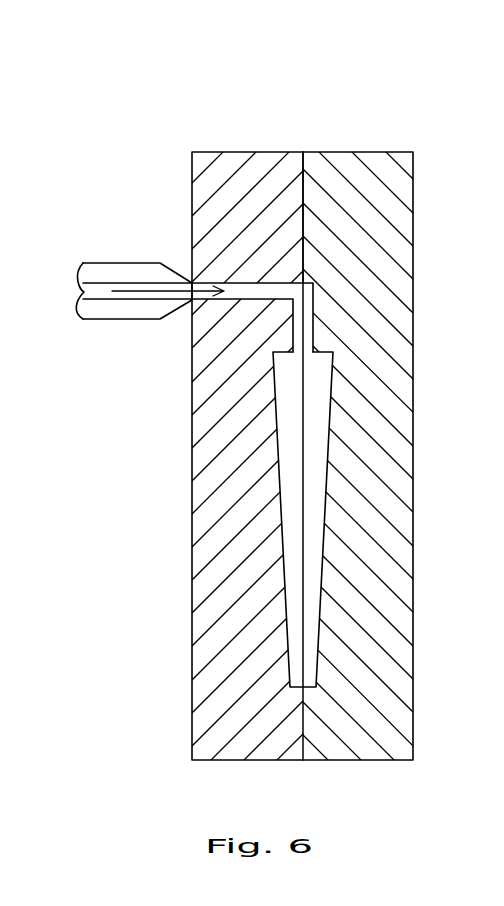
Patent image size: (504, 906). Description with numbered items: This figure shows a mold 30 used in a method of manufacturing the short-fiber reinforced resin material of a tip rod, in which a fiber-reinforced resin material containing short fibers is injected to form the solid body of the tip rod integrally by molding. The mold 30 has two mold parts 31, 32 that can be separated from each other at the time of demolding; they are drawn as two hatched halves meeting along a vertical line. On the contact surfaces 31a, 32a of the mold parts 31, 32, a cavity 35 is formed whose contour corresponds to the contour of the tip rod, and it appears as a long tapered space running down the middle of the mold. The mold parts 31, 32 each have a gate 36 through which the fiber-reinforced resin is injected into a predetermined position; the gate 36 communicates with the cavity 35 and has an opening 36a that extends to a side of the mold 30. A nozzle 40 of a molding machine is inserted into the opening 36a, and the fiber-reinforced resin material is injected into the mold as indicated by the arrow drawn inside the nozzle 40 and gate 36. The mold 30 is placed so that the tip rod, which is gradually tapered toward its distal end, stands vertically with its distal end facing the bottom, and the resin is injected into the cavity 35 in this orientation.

The mold 30 is at (402, 110).
The mold part 31 is at (207, 412).
The contact surface 31a is at (303, 231).
The mold part 32 is at (402, 390).
The contact surface 32a is at (302, 217).
The cavity 35 is at (315, 455).
The gate 36 is at (307, 312).
The opening 36a is at (192, 291).
The nozzle 40 is at (101, 271).